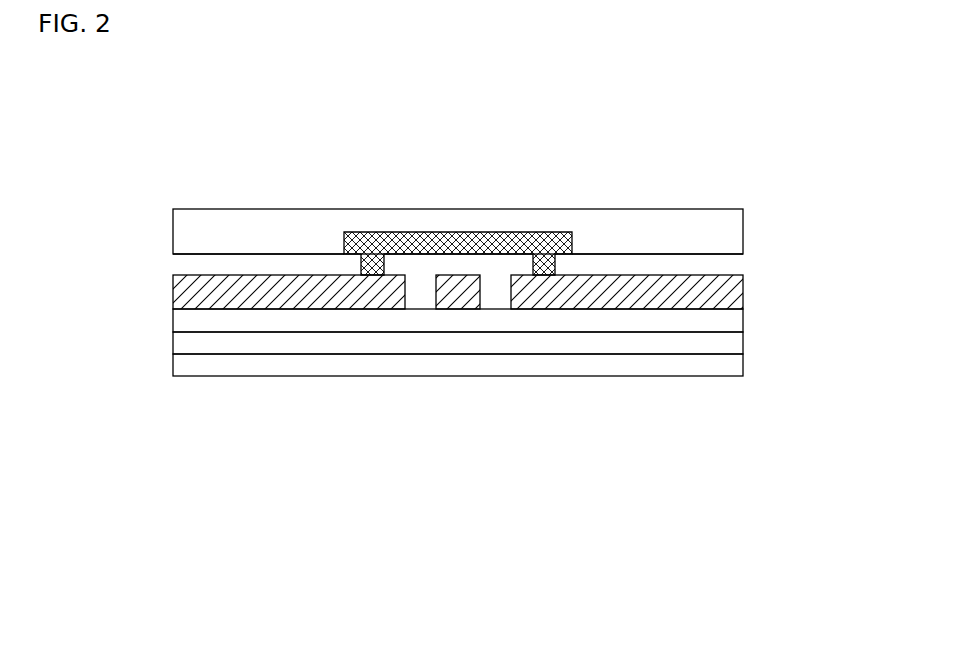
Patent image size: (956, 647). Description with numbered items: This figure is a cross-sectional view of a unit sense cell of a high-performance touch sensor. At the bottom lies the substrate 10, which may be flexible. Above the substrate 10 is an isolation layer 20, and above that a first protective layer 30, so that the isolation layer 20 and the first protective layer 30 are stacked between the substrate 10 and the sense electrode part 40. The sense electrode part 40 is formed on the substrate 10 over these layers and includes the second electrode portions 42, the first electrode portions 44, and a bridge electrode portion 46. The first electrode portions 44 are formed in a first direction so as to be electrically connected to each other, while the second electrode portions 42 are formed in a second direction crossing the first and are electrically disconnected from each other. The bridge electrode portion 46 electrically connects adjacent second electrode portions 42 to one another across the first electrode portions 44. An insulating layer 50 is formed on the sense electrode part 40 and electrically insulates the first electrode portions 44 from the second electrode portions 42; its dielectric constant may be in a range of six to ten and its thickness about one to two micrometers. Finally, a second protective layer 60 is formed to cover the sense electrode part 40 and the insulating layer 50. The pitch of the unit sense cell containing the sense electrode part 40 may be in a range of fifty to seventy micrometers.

The substrate 10 is at (737, 370).
The isolation layer 20 is at (737, 343).
The first protective layer 30 is at (737, 317).
The sense electrode part 40 is at (525, 110).
The second electrode portions 42 is at (293, 285).
The first electrode portions 44 is at (453, 286).
The bridge electrode portion 46 is at (510, 242).
The insulating layer 50 is at (522, 267).
The second protective layer 60 is at (731, 227).